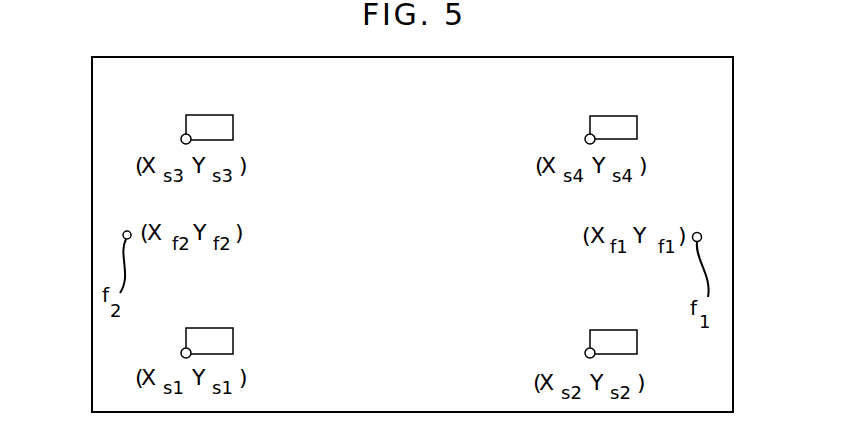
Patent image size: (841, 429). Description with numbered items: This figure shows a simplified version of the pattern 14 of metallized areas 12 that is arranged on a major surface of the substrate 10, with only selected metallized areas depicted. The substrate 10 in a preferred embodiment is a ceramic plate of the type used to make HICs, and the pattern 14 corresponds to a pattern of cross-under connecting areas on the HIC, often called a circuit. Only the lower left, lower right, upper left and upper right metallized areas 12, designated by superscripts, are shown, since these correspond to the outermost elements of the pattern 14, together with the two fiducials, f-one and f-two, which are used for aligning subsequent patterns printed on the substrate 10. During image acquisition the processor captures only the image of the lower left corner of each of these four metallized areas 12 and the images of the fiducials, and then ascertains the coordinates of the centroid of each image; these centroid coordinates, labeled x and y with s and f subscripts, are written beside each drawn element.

The substrate 10 is at (717, 165).
The metallized areas 12 is at (223, 127).
The pattern 14 is at (69, 239).